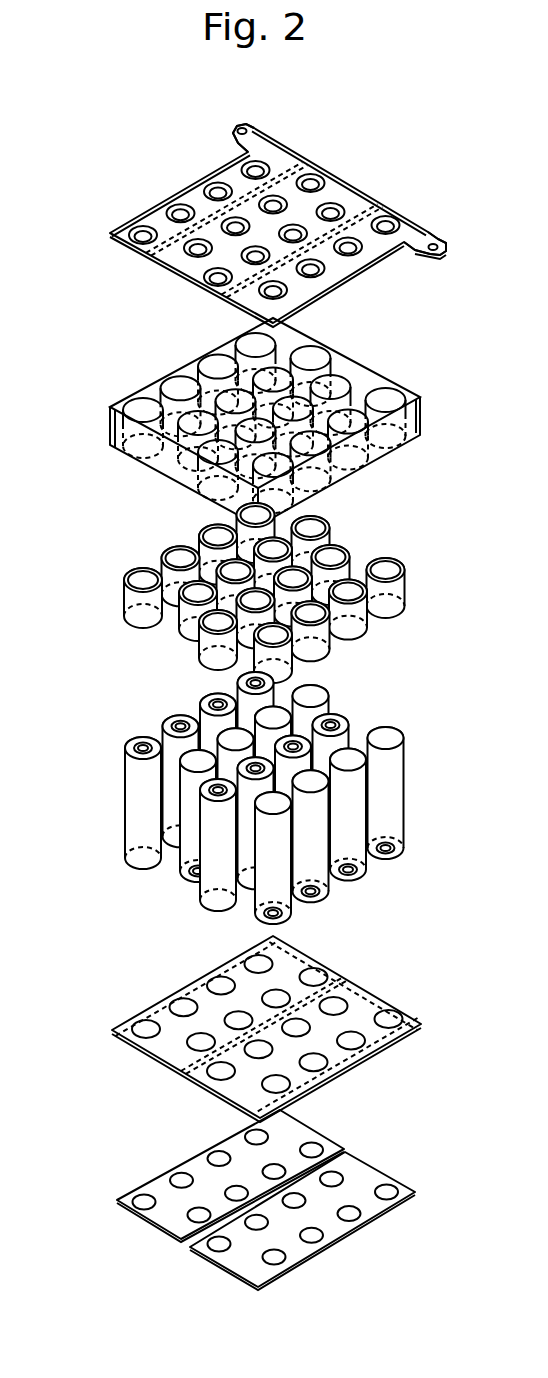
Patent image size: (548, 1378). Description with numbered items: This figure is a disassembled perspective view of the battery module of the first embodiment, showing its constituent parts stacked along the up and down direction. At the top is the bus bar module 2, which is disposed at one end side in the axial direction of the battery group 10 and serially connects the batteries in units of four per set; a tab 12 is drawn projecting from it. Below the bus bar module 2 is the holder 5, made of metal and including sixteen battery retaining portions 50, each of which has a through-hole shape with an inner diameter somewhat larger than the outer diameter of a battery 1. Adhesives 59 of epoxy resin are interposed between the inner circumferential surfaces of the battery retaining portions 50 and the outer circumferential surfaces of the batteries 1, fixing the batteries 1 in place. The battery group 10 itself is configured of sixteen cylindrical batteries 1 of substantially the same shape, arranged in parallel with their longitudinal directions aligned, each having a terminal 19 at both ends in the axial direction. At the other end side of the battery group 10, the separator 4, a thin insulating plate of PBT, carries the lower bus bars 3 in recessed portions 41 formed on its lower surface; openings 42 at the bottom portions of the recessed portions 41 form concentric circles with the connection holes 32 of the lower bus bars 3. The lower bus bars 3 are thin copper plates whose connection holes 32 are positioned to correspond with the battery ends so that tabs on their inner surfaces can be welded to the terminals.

The bus bar module 2 is at (278, 222).
The terminal tab 12 is at (385, 205).
The holder 5 is at (236, 422).
The battery retaining portion 50 is at (143, 408).
The adhesive 59 is at (127, 597).
The battery group 10 is at (258, 788).
The battery 1 is at (421, 793).
The terminal 19 is at (327, 749).
The separator 4 is at (273, 1036).
The recessed portion 41 is at (152, 1047).
The opening 42 is at (365, 1053).
The lower bus bar 3 is at (274, 1189).
The connection hole 32 is at (385, 1233).